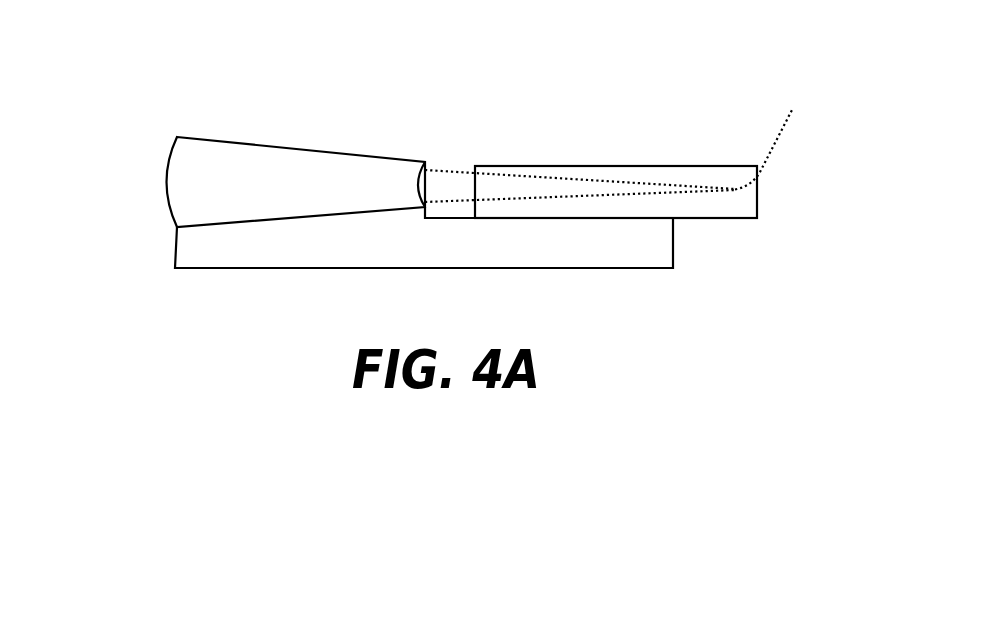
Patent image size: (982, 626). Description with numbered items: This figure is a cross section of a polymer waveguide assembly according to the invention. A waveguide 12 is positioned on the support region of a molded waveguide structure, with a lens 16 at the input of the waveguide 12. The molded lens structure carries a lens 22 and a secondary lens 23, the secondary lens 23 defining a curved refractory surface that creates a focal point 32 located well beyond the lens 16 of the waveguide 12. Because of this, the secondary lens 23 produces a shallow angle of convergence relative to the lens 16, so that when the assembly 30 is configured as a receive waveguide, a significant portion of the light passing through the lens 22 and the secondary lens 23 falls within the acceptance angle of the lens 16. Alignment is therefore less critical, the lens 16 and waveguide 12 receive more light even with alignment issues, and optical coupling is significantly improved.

The waveguide 12 is at (698, 182).
The lens 16 is at (483, 166).
The lens 22 is at (166, 179).
The secondary lens 23 is at (428, 163).
The assembly base 30 is at (124, 329).
The focal point 32 is at (627, 141).